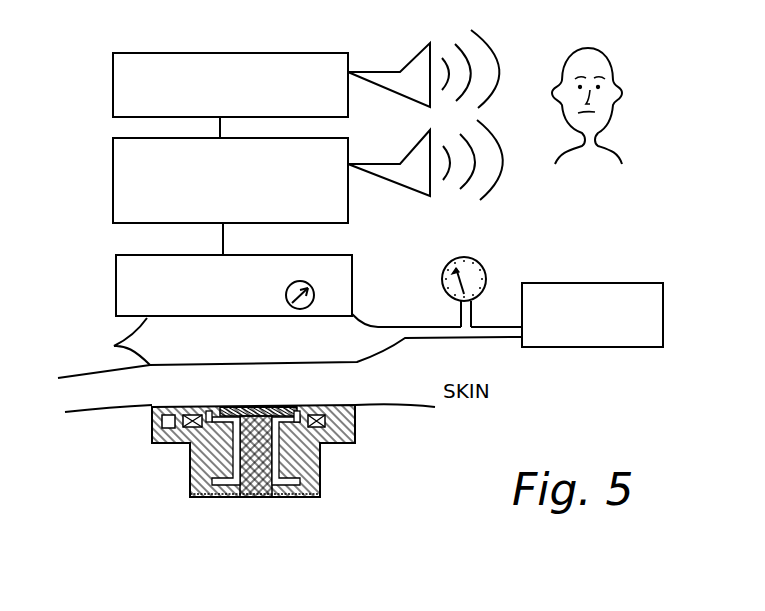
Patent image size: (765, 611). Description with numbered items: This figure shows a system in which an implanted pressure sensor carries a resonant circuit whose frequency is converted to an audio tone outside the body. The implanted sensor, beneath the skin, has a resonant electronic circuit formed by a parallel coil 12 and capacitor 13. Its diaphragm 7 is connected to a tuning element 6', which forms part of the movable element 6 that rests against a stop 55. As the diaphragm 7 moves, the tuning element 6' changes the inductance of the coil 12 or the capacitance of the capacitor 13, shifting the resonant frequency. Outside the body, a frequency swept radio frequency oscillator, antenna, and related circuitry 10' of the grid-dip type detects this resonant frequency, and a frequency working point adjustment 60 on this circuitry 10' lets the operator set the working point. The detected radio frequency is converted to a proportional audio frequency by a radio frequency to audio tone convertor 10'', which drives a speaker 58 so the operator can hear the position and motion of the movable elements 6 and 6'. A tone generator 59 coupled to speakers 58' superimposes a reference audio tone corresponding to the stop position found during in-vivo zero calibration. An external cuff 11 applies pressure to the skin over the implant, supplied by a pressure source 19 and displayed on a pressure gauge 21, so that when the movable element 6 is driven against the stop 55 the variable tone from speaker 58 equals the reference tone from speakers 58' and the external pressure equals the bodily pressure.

The tone generator 59 is at (112, 82).
The radio frequency to audio tone convertor 10'' is at (198, 180).
The frequency swept radio frequency oscillator, antenna, and related circuitry 10' is at (201, 285).
The speakers 58' is at (423, 55).
The speaker 58 is at (425, 173).
The frequency working point adjustment 60 is at (315, 297).
The pressure gauge 21 is at (473, 282).
The pressure source 19 is at (663, 325).
The inflatable cuff 11 is at (140, 335).
The diaphragm 7 is at (253, 405).
The tuning element 6' is at (277, 395).
The movable element 6 is at (236, 488).
The coil 12 is at (357, 428).
The capacitor 13 is at (168, 438).
The stop 55 is at (322, 455).